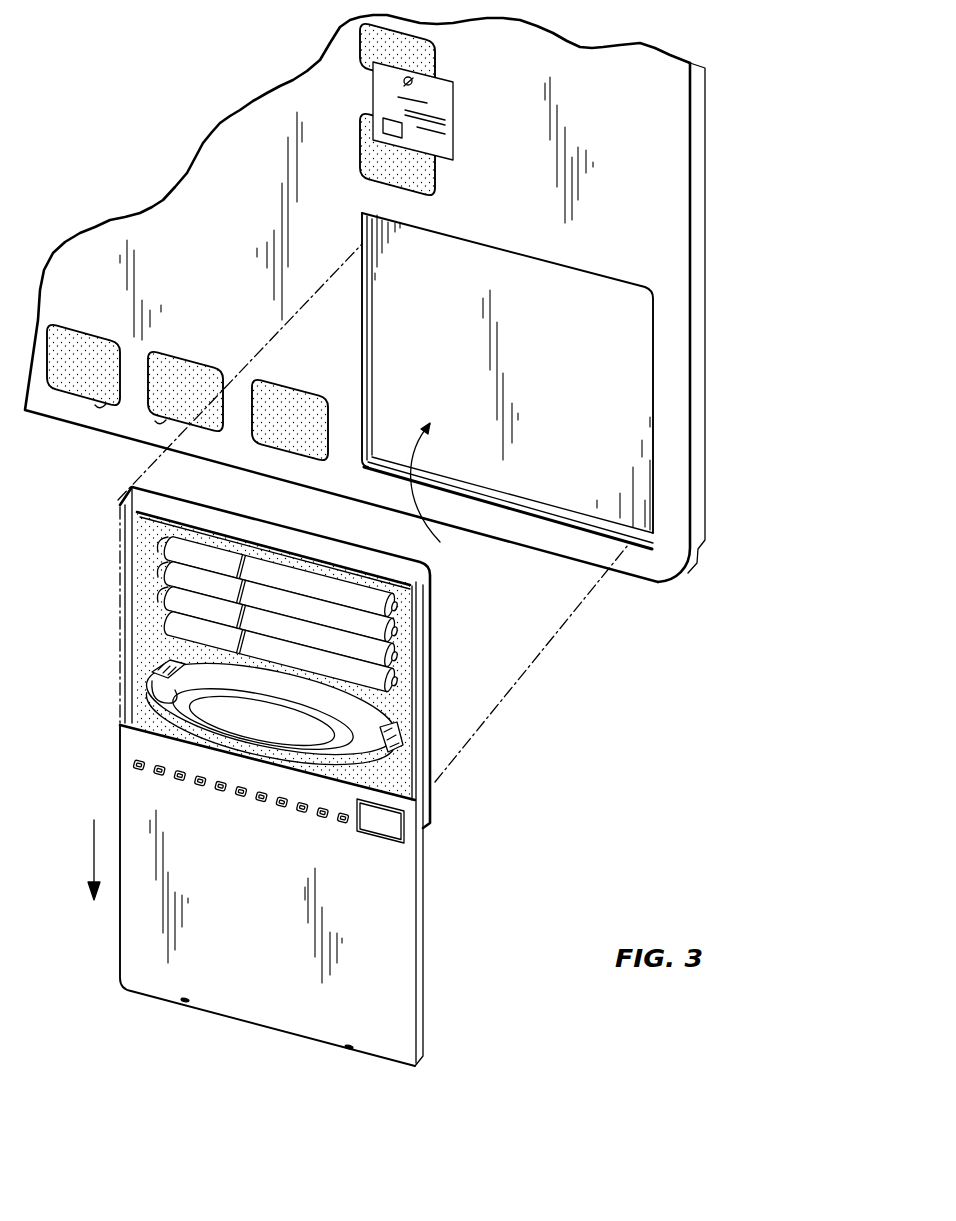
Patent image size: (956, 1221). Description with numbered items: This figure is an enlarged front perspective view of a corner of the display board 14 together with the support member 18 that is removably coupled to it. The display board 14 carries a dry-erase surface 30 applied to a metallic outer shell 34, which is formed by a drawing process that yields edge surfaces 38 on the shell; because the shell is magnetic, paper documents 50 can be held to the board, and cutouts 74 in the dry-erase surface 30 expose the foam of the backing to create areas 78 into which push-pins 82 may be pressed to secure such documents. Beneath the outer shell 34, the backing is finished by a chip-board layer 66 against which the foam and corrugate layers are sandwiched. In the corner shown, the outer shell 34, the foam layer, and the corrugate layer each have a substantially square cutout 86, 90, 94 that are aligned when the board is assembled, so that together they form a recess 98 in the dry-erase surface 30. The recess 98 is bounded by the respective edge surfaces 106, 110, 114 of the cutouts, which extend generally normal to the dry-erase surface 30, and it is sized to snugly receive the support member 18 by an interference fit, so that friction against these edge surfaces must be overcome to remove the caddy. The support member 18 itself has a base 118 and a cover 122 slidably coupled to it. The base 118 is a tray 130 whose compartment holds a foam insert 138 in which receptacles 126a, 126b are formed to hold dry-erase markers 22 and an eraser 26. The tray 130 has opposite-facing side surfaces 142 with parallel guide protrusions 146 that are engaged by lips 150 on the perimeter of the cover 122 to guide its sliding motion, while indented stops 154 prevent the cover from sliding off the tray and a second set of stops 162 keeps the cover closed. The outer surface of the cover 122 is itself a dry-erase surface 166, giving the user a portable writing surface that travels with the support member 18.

The display board 14 is at (722, 127).
The support member 18 is at (107, 540).
The dry-erase markers 22 is at (397, 684).
The eraser 26 is at (157, 674).
The dry-erase surface 30 is at (236, 217).
The outer shell 34 is at (670, 165).
The edge surfaces 38 is at (700, 232).
The paper documents 50 is at (448, 118).
The chip-board layer 66 is at (617, 338).
The cutouts 74 is at (360, 127).
The areas 78 is at (427, 50).
The push-pins 82 is at (410, 88).
The cutout in outer shell 86 is at (362, 270).
The cutout in foam layer 90 is at (369, 302).
The cutout in corrugate layer 94 is at (373, 348).
The recess 98 is at (436, 493).
The edge surface of outer shell cutout 106 is at (460, 497).
The edge surface of foam layer cutout 110 is at (540, 514).
The edge surface of corrugate layer cutout 114 is at (583, 518).
The base 118 is at (430, 568).
The cover 122 is at (397, 930).
The receptacle 126a is at (157, 587).
The receptacle 126b is at (158, 693).
The tray 130 is at (327, 545).
The foam insert 138 is at (393, 772).
The side surfaces 142 is at (427, 585).
The guide protrusions 146 is at (418, 717).
The lips 150 is at (420, 905).
The stops 154 is at (262, 804).
The stops 162 is at (185, 998).
The dry-erase surface 166 is at (263, 937).